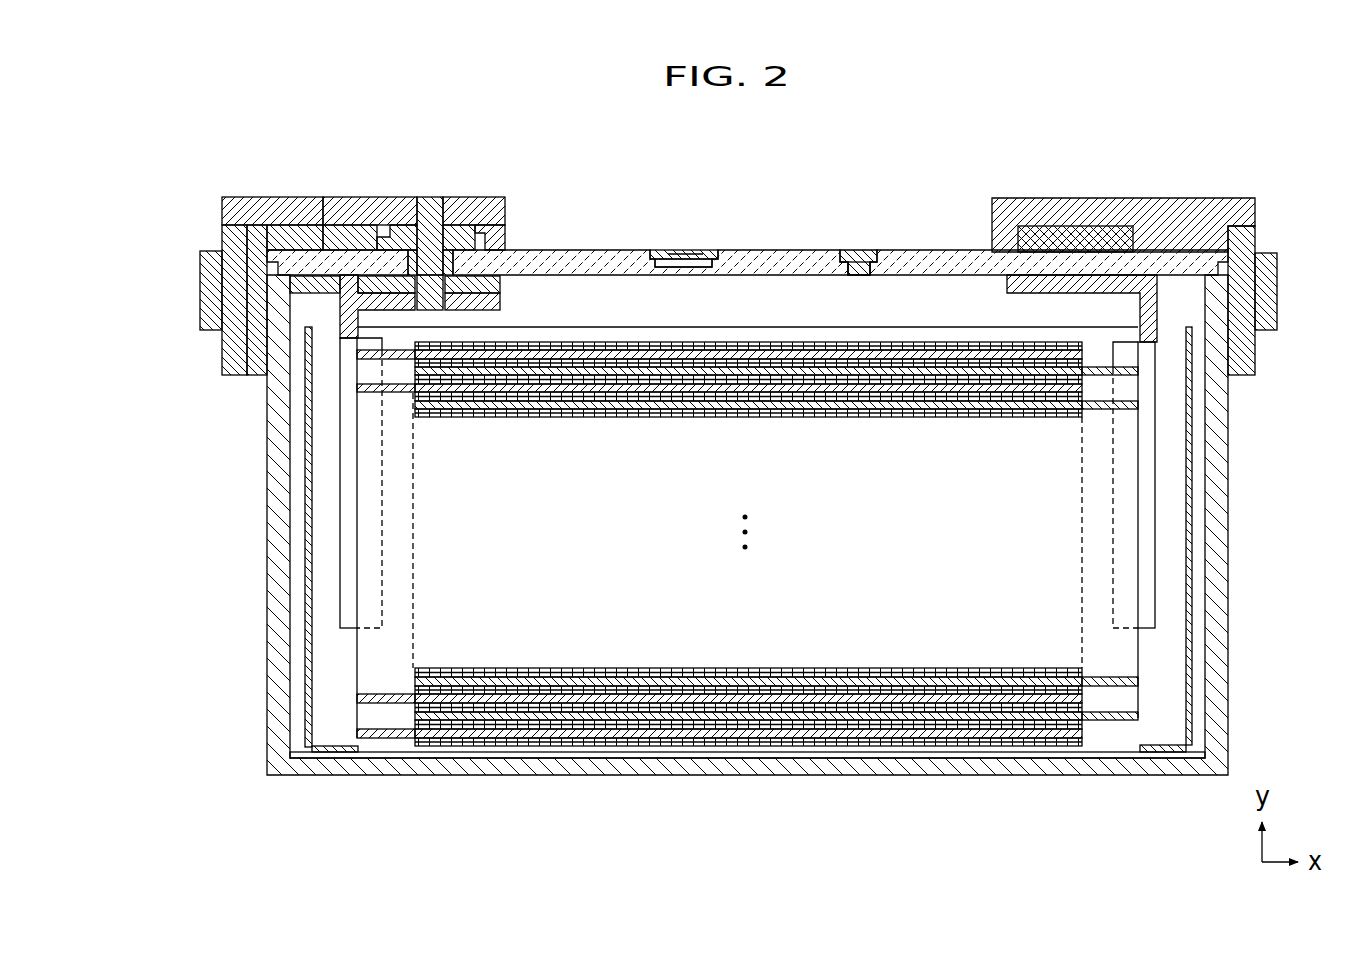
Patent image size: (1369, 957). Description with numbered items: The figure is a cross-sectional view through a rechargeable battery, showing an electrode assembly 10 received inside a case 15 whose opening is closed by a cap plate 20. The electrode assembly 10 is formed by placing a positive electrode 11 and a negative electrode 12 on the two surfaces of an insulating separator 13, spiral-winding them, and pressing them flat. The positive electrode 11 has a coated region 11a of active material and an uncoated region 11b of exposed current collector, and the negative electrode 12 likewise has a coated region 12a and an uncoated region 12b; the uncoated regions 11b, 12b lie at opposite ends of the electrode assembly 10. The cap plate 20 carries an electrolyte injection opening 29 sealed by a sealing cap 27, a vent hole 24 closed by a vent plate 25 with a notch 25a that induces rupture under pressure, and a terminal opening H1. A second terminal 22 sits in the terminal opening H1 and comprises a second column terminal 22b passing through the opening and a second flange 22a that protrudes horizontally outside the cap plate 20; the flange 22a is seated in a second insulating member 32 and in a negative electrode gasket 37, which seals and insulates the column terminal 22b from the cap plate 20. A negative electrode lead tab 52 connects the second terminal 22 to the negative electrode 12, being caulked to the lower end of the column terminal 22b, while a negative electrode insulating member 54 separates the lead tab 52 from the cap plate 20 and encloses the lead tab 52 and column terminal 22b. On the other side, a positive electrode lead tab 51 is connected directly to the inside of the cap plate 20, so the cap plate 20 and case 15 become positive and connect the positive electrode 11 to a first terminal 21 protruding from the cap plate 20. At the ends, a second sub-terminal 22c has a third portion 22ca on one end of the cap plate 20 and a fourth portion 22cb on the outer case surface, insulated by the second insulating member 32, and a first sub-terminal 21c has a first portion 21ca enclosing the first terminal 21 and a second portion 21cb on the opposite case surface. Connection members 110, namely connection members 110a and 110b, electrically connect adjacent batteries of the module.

The electrode assembly 10 is at (749, 531).
The positive electrode 11 is at (778, 622).
The coated region of the positive electrode 11a is at (1002, 718).
The uncoated region of the positive electrode 11b is at (1112, 601).
The negative electrode 12 is at (719, 614).
The coated region of the negative electrode 12a is at (506, 736).
The uncoated region of the negative electrode 12b is at (386, 593).
The separator 13 is at (578, 345).
The case 15 is at (280, 445).
The cap plate 20 is at (780, 268).
The first terminal 21 is at (1050, 235).
The first sub-terminal 21c is at (1160, 234).
The first portion 21ca is at (1225, 208).
The second portion 21cb is at (1262, 246).
The second terminal 22 is at (434, 300).
The second flange 22a is at (463, 230).
The second column terminal 22b is at (428, 296).
The second sub-terminal 22c is at (247, 234).
The third portion 22ca is at (273, 205).
The fourth portion 22cb is at (282, 133).
The vent hole 24 is at (680, 268).
The vent plate 25 is at (713, 255).
The notch 25a is at (680, 256).
The sealing cap 27 is at (868, 250).
The electrolyte injection opening 29 is at (858, 252).
The second insulating member 32 is at (352, 237).
The negative electrode gasket 37 is at (393, 247).
The positive electrode lead tab 51 is at (1162, 588).
The negative electrode lead tab 52 is at (332, 513).
The negative electrode insulating member 54 is at (330, 288).
The connection members 110 is at (735, 504).
The connection member 110a is at (1277, 290).
The connection member 110b is at (215, 307).
The terminal opening H1 is at (437, 253).